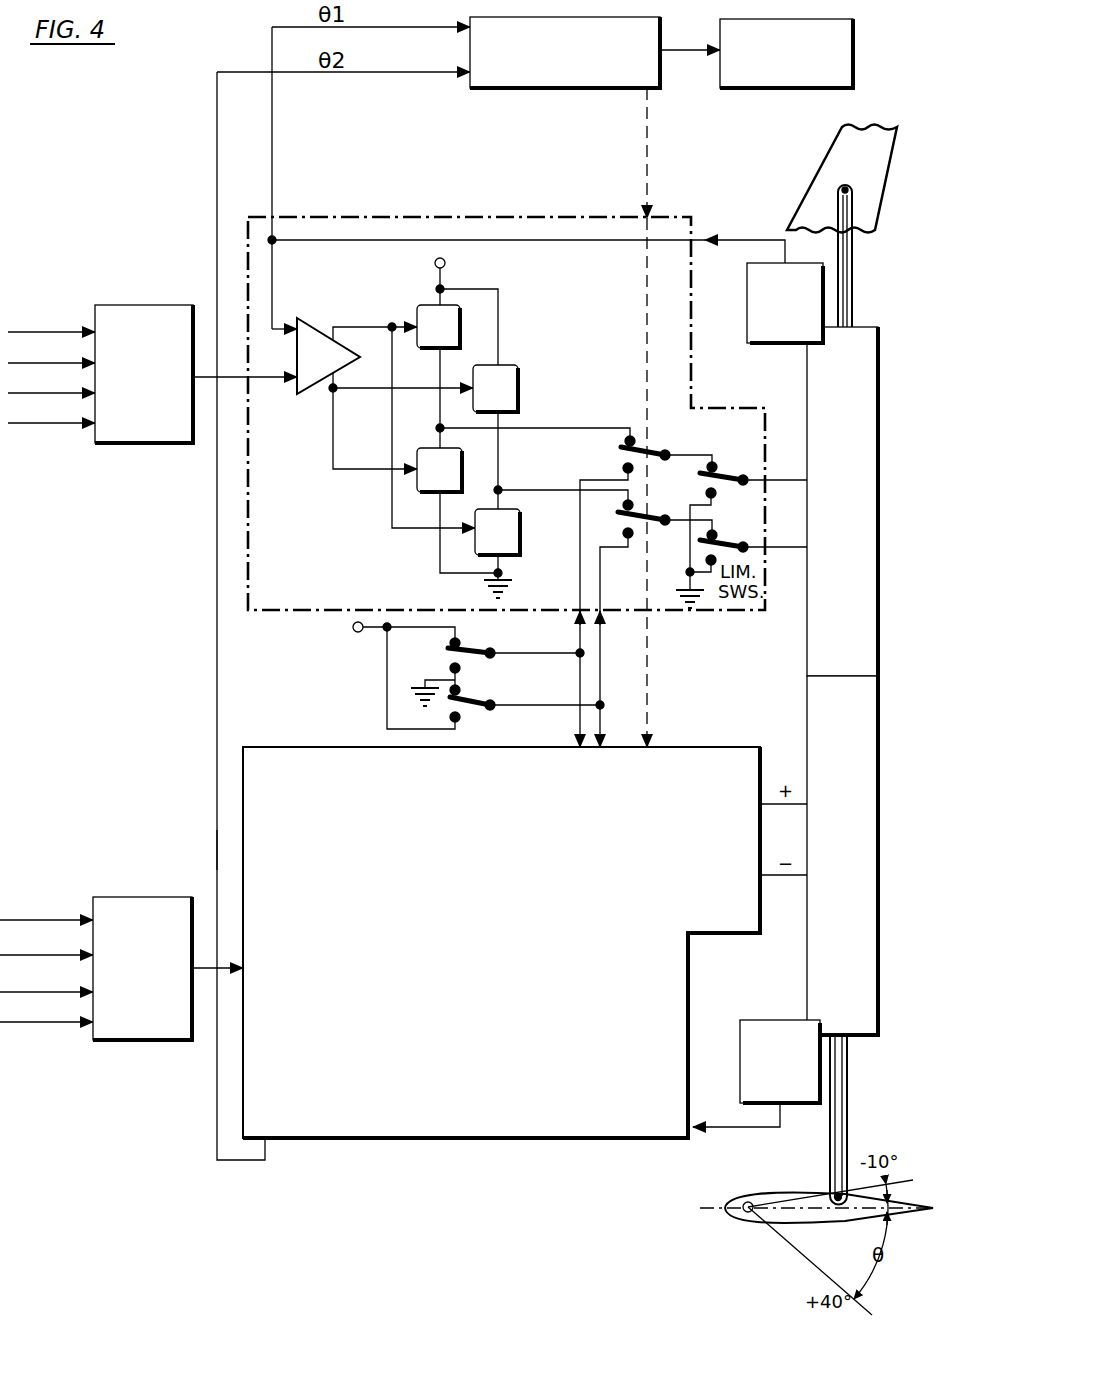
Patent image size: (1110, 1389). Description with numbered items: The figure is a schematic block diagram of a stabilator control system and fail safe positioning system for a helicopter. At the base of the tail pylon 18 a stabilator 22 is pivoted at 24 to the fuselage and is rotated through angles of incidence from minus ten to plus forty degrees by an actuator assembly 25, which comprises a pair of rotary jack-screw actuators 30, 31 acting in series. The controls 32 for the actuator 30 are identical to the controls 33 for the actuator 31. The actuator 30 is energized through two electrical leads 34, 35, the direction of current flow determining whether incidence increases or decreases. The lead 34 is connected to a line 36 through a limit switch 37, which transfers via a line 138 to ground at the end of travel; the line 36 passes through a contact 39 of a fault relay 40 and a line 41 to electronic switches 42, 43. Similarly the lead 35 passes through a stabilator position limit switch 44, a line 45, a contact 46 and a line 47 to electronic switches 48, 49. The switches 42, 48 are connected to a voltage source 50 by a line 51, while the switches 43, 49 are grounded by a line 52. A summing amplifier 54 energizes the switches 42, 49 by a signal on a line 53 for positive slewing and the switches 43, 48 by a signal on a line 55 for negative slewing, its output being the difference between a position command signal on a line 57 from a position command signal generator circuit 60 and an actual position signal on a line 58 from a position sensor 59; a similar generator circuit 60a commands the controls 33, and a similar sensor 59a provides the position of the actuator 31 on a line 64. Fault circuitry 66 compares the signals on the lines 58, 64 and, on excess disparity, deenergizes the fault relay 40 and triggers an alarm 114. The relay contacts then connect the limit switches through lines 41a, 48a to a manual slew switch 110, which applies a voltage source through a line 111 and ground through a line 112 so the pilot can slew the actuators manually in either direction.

The tail pylon 18 is at (840, 138).
The stabilator 22 is at (750, 1195).
The pivot 24 is at (760, 1200).
The actuator assembly 25 is at (805, 672).
The actuator 30 is at (868, 406).
The actuator 31 is at (868, 742).
The controls 32 is at (483, 215).
The controls 33 is at (285, 745).
The electrical lead 34 is at (775, 485).
The electrical lead 35 is at (775, 553).
The line 36 is at (690, 455).
The limit switch 37 is at (728, 470).
The contact 39 is at (650, 437).
The fault relay 40 is at (633, 432).
The line 41 is at (545, 428).
The line 41a is at (583, 640).
The electronic switch 42 is at (428, 305).
The electronic switch 43 is at (420, 448).
The stabilator position limit switch 44 is at (728, 535).
The line 45 is at (677, 518).
The contact 46 is at (632, 540).
The line 47 is at (535, 490).
The electronic switch 48 is at (518, 368).
The line 48a is at (600, 665).
The electronic switch 49 is at (520, 532).
The voltage source 50 is at (435, 263).
The line 51 is at (475, 287).
The line 52 is at (440, 560).
The line 53 is at (380, 326).
The summing amplifier 54 is at (322, 318).
The line 55 is at (333, 440).
The line 57 is at (262, 395).
The line 58 is at (318, 245).
The position sensor 59 is at (747, 294).
The position sensor 59a is at (740, 1044).
The position command signal generator circuit 60 is at (125, 304).
The position command signal generator circuit 60a is at (158, 895).
The line 64 is at (217, 836).
The fault circuitry 66 is at (505, 94).
The manual slew switch 110 is at (490, 642).
The line 111 is at (405, 632).
The line 112 is at (425, 680).
The alarm 114 is at (760, 92).
The line 138 is at (690, 583).